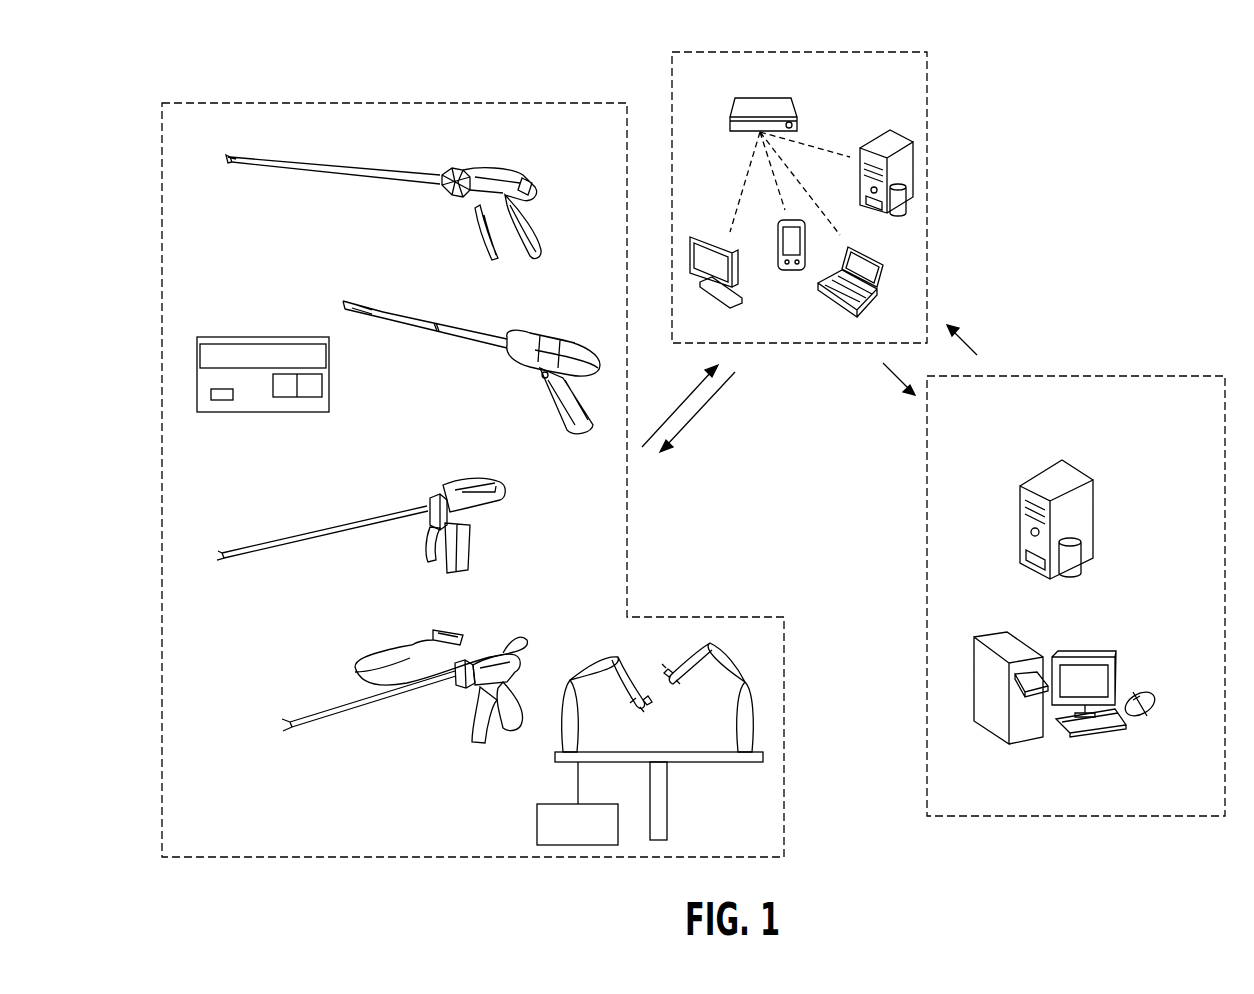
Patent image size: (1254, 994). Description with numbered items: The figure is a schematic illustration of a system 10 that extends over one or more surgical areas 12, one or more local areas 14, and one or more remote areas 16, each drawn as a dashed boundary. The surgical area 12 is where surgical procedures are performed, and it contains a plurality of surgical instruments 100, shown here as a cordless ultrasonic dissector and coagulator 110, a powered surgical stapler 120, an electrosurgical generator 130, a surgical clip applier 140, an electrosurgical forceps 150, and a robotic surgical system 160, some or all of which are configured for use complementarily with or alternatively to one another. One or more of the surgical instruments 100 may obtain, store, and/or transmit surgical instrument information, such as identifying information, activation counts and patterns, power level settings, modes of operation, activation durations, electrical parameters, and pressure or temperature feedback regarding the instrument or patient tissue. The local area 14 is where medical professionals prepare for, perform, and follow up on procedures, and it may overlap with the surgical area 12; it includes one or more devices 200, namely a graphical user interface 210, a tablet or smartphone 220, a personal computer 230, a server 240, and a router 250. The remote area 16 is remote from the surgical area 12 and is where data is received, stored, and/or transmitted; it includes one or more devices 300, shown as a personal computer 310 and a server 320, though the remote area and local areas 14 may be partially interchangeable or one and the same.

The system 10 is at (1113, 173).
The surgical area 12 is at (553, 103).
The local area 14 is at (877, 52).
The remote area 16 is at (1178, 373).
The surgical instruments 100 is at (527, 165).
The cordless ultrasonic dissector and coagulator 110 is at (327, 527).
The powered surgical stapler 120 is at (400, 313).
The electrosurgical generator 130 is at (260, 335).
The surgical clip applier 140 is at (327, 165).
The electrosurgical forceps 150 is at (342, 708).
The robotic surgical system 160 is at (555, 752).
The devices 200 is at (825, 100).
The graphical user interface 210 is at (715, 242).
The tablet or smartphone 220 is at (795, 272).
The personal computer 230 is at (883, 282).
The server 240 is at (915, 167).
The router 250 is at (762, 98).
The devices 300 is at (1107, 439).
The personal computer 310 is at (1167, 746).
The server 320 is at (1097, 507).